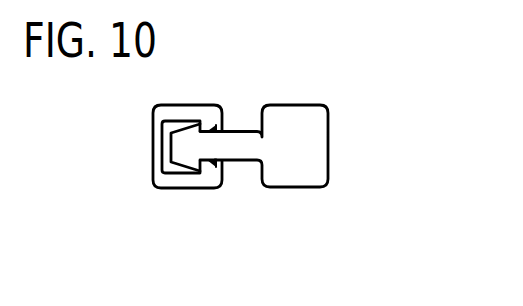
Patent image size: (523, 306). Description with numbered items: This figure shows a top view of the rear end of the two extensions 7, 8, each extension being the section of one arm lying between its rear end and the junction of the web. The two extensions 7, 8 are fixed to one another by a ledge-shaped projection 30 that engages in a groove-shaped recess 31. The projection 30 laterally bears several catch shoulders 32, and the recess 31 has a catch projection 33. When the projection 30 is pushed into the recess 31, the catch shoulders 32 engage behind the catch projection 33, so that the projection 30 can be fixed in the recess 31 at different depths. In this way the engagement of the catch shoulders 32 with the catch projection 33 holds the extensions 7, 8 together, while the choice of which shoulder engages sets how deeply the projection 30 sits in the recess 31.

The extension 7 is at (171, 203).
The extension 8 is at (293, 203).
The ledge-shaped projection 30 is at (180, 139).
The groove-shaped recess 31 is at (184, 126).
The catch shoulders 32 is at (221, 164).
The catch projection 33 is at (220, 129).